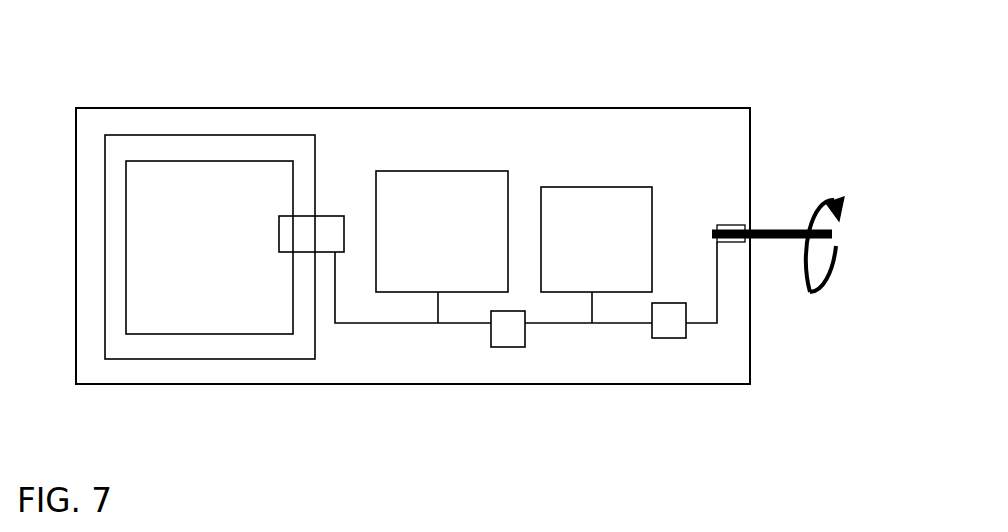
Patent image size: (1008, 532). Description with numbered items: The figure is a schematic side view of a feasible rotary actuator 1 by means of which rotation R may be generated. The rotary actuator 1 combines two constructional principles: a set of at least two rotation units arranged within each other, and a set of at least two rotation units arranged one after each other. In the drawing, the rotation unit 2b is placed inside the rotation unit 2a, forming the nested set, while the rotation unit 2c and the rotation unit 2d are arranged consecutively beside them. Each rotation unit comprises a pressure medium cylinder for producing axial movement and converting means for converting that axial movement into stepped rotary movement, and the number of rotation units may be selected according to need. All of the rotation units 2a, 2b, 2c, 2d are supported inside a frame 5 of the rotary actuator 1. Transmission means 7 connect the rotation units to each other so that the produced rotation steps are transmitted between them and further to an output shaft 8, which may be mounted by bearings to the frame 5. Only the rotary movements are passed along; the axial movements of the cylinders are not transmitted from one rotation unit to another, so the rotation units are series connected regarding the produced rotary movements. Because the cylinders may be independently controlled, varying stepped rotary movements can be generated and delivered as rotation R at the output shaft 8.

The rotary actuator 1 is at (105, 48).
The rotation unit 2a is at (143, 135).
The rotation unit 2b is at (216, 161).
The rotation unit 2c is at (430, 170).
The rotation unit 2d is at (592, 187).
The frame 5 is at (326, 108).
The transmission means 7 is at (329, 228).
The output shaft 8 is at (757, 228).
The rotation R is at (831, 227).